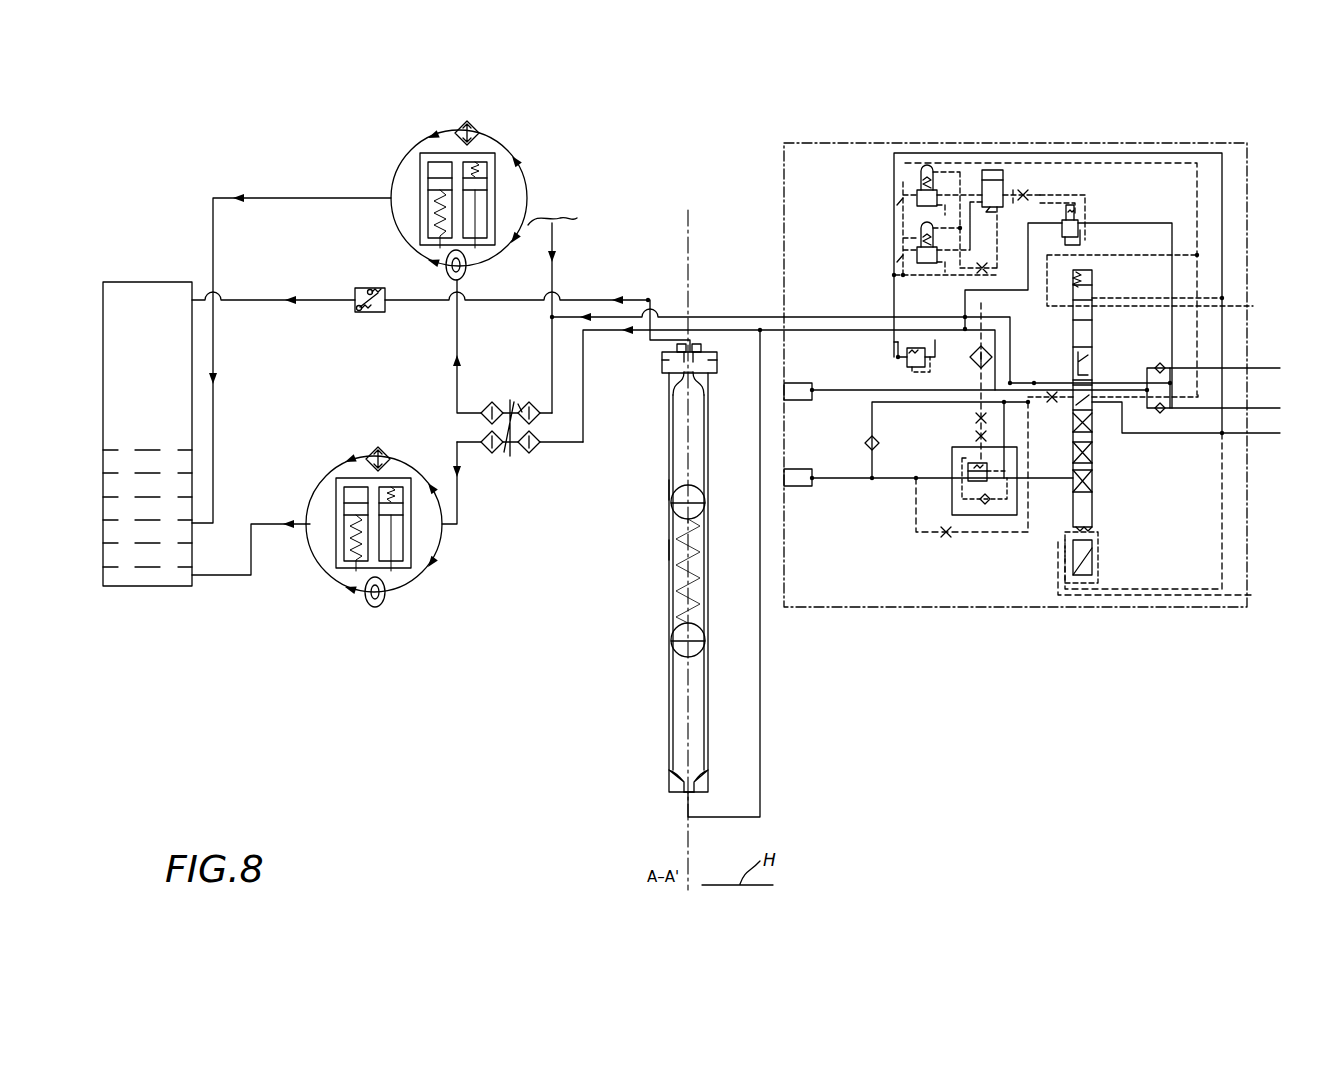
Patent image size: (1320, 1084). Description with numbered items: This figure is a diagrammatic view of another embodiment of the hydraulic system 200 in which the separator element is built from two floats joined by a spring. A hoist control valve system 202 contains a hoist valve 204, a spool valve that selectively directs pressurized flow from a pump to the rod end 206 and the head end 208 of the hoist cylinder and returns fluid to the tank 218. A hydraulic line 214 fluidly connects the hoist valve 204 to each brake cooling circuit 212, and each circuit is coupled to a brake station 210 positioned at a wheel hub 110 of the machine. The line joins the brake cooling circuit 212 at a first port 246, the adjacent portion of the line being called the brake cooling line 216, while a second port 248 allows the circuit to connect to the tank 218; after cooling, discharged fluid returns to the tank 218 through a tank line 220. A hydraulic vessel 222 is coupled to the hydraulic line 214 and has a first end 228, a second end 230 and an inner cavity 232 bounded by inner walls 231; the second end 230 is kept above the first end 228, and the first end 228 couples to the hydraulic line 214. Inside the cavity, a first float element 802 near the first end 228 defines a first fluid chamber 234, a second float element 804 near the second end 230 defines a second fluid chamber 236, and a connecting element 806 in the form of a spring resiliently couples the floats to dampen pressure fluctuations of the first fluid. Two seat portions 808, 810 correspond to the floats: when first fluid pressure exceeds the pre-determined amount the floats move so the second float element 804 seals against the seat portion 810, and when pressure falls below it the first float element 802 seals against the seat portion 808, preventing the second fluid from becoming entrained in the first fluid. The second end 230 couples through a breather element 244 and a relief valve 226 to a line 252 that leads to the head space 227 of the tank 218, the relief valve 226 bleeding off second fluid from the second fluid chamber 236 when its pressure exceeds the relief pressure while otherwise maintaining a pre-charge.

The hydraulic system 200 is at (262, 136).
The hoist control valve system 202 is at (763, 170).
The hoist valve 204 is at (1093, 507).
The rod end 206 is at (1231, 399).
The head end 208 is at (1231, 359).
The wheel hub 110 is at (470, 272).
The brake station 210 is at (497, 186).
The brake cooling circuit 212 is at (480, 129).
The hydraulic line 214 is at (735, 314).
The brake cooling line 216 is at (463, 340).
The tank 218 is at (150, 588).
The tank line 220 is at (218, 393).
The hydraulic vessel 222 is at (672, 490).
The relief valve 226 is at (352, 306).
The head space 227 is at (165, 369).
The first end 228 is at (677, 794).
The second end 230 is at (668, 356).
The inner walls 231 is at (672, 545).
The inner cavity 232 is at (680, 433).
The first fluid chamber 234 is at (705, 714).
The second fluid chamber 236 is at (705, 476).
The breather element 244 is at (712, 347).
The first port 246 is at (443, 526).
The second port 248 is at (297, 530).
The line 252 is at (249, 303).
The first float element 802 is at (680, 650).
The second float element 804 is at (697, 513).
The connecting element 806 is at (698, 576).
The seat portion 808 is at (677, 769).
The seat portion 810 is at (693, 382).